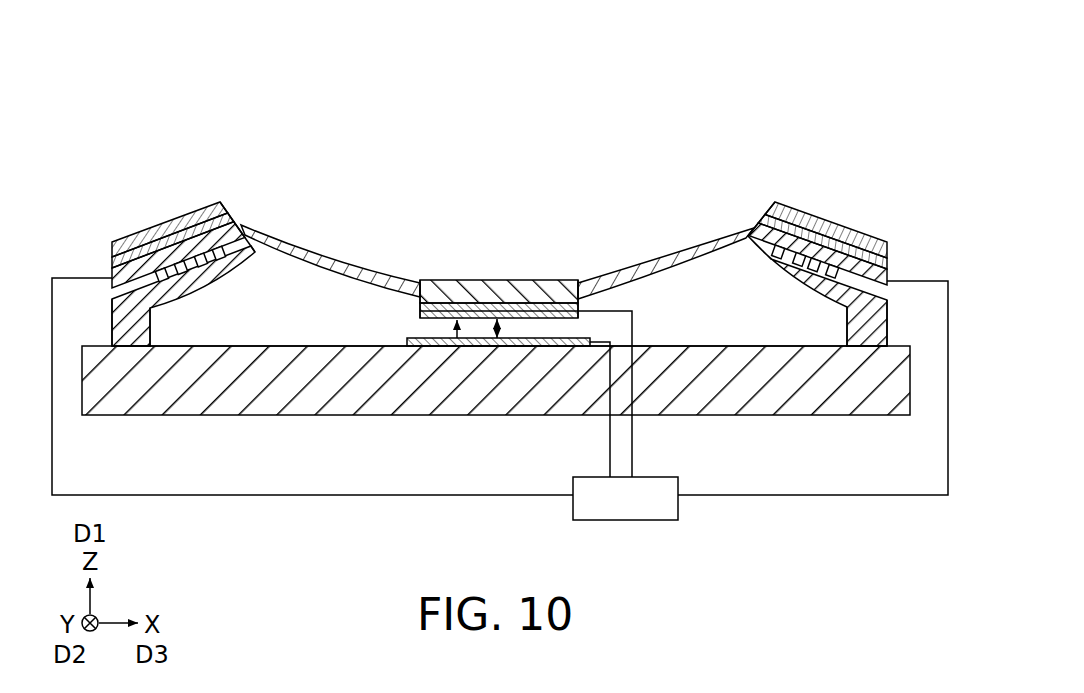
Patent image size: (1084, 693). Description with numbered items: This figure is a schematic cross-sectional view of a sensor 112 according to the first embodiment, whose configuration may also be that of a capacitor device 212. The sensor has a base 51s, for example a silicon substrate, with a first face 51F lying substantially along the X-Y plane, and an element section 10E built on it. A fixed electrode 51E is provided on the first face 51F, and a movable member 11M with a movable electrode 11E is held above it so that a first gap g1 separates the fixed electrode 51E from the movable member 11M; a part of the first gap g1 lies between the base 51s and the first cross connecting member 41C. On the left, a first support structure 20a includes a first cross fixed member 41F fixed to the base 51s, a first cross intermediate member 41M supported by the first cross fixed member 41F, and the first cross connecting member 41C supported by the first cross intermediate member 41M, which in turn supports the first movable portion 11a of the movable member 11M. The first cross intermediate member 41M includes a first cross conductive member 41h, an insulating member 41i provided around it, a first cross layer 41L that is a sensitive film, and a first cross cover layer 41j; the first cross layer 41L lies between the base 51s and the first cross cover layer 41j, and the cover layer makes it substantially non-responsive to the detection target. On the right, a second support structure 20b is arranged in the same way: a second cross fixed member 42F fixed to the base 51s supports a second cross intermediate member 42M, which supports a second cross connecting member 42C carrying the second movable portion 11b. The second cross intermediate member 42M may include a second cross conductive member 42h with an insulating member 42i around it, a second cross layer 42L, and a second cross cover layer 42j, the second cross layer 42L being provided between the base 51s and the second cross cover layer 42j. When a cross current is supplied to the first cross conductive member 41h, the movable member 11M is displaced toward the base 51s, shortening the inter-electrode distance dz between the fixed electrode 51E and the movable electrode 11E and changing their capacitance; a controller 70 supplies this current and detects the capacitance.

The element section 10E is at (585, 107).
The sensor 112 is at (661, 97).
The capacitor device 212 is at (760, 65).
The first support structure 20a is at (268, 142).
The second support structure 20b is at (723, 142).
The first cross intermediate member 41M is at (257, 158).
The first cross conductive member 41h is at (153, 270).
The first cross layer 41L is at (163, 262).
The insulating member 41i is at (203, 256).
The first cross cover layer 41j is at (200, 205).
The second cross intermediate member 42M is at (935, 157).
The second cross conductive member 42h is at (850, 272).
The second cross layer 42L is at (832, 257).
The insulating member 42i is at (792, 252).
The second cross cover layer 42j is at (786, 203).
The first cross connecting member 41C is at (345, 262).
The second cross connecting member 42C is at (668, 262).
The first cross fixed member 41F is at (128, 328).
The second cross fixed member 42F is at (872, 322).
The first movable portion 11a is at (427, 282).
The second movable portion 11b is at (570, 282).
The movable member 11M is at (466, 298).
The movable electrode 11E is at (510, 310).
The base 51s is at (233, 392).
The fixed electrode 51E is at (489, 344).
The first face 51F is at (757, 338).
The first gap g1 is at (456, 340).
The inter-electrode distance dz is at (511, 322).
The controller 70 is at (678, 505).